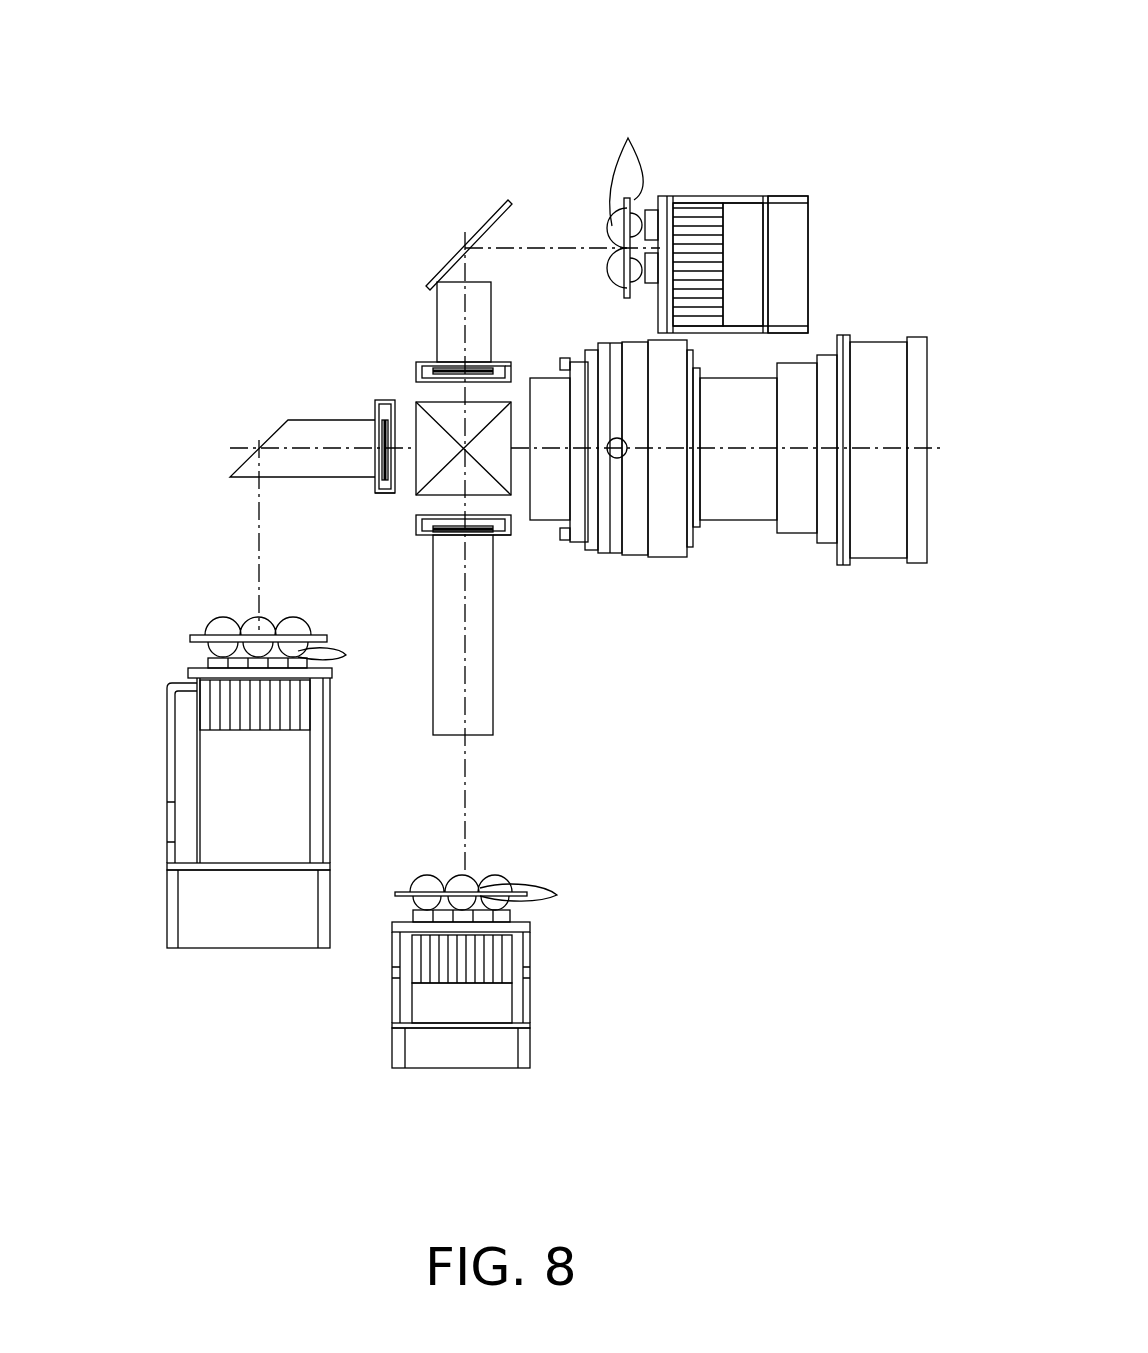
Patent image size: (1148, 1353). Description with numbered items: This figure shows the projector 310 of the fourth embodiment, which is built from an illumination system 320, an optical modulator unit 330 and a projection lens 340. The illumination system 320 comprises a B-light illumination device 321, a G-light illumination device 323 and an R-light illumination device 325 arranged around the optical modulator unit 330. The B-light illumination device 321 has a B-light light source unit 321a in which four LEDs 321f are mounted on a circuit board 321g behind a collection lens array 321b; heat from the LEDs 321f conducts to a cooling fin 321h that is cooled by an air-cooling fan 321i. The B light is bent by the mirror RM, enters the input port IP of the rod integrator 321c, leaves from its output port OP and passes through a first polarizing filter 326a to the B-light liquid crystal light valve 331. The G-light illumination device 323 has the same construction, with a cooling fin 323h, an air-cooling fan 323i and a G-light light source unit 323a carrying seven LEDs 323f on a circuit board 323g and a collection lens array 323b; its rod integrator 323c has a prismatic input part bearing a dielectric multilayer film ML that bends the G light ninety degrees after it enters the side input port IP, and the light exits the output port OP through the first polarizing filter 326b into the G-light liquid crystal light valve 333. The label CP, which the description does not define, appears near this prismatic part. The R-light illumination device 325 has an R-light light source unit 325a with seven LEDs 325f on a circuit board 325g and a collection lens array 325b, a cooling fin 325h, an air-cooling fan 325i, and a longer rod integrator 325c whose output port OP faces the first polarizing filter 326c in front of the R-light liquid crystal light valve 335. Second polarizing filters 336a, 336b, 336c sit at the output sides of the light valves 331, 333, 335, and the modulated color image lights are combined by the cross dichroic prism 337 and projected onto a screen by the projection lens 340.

The projector 310 is at (897, 31).
The illumination system 320 is at (822, 147).
The B-light illumination device 321 is at (512, 148).
The B-light light source unit 321a is at (665, 170).
The collection lens array 321b is at (622, 230).
The rod integrator 321c is at (438, 304).
The LED 321f is at (632, 167).
The circuit board 321g is at (672, 198).
The cooling fin 321h is at (707, 197).
The air-cooling fan 321i is at (808, 224).
The G-light illumination device 323 is at (186, 511).
The G-light light source unit 323a is at (177, 650).
The collection lens array 323b is at (212, 622).
The rod integrator 323c is at (292, 418).
The LED 323f is at (328, 655).
The circuit board 323g is at (183, 673).
The cooling fin 323h is at (330, 828).
The air-cooling fan 323i is at (218, 948).
The R-light illumination device 325 is at (588, 772).
The R-light light source unit 325a is at (392, 915).
The collection lens array 325b is at (494, 872).
The rod integrator 325c is at (494, 700).
The LED 325f is at (557, 895).
The circuit board 325g is at (530, 930).
The cooling fin 325h is at (530, 998).
The air-cooling fan 325i is at (505, 1068).
The first polarizing filter 326a is at (433, 369).
The first polarizing filter 326b is at (377, 460).
The first polarizing filter 326c is at (455, 533).
The optical modulator unit 330 is at (325, 305).
The B-light liquid crystal light valve 331 is at (504, 402).
The G-light liquid crystal light valve 333 is at (385, 496).
The R-light liquid crystal light valve 335 is at (495, 538).
The second polarizing filter 336a is at (418, 382).
The second polarizing filter 336b is at (396, 472).
The second polarizing filter 336c is at (512, 530).
The cross dichroic prism 337 is at (512, 372).
The projection lens 340 is at (667, 557).
The mirror RM is at (478, 225).
The input port IP is at (473, 281).
The output port OP is at (485, 362).
The crossing point CP is at (376, 407).
The dielectric multilayer film ML is at (262, 446).